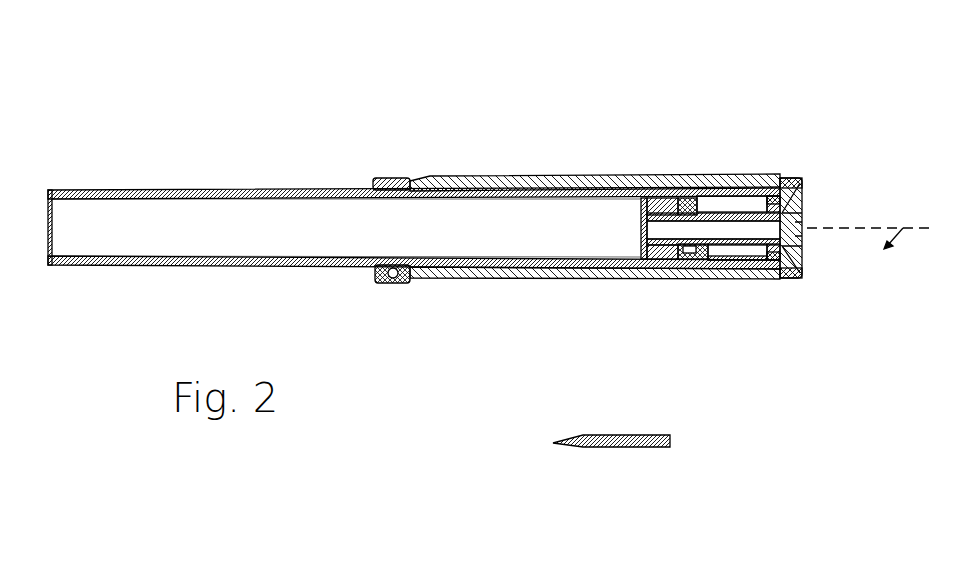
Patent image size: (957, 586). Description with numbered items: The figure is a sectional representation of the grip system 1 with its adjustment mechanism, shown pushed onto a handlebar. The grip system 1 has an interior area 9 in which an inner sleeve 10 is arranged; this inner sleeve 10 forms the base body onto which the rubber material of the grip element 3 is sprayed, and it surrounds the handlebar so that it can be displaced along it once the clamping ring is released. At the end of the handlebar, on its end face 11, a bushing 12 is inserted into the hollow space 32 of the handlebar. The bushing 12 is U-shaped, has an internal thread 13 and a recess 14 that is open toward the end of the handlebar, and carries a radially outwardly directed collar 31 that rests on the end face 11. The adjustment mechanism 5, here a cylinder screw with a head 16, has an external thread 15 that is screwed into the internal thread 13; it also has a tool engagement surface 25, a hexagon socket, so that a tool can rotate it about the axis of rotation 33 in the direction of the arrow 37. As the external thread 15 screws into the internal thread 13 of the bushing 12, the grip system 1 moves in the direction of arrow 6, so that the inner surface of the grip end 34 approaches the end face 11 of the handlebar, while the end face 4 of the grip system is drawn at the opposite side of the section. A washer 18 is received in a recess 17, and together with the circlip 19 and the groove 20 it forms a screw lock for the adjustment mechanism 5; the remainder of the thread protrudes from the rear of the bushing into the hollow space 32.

The grip system 1 is at (560, 150).
The grip element 3 is at (615, 177).
The end face 4 is at (807, 238).
The adjustment mechanism 5 is at (728, 232).
The arrow 6 is at (628, 447).
The interior area 9 is at (483, 213).
The inner sleeve 10 is at (515, 272).
The end face 11 is at (728, 265).
The bushing 12 is at (673, 262).
The internal thread 13 is at (690, 262).
The recess 14 is at (668, 200).
The external thread 15 is at (746, 205).
The head 16 is at (803, 213).
The recess 17 is at (771, 200).
The washer 18 is at (795, 205).
The circlip 19 is at (768, 275).
The groove 20 is at (773, 256).
The tool engagement surface 25 is at (800, 262).
The collar 31 is at (721, 205).
The hollow space 32 is at (575, 225).
The axis of rotation 33 is at (855, 228).
The grip end 34 is at (788, 190).
The direction of the arrow 37 is at (902, 230).